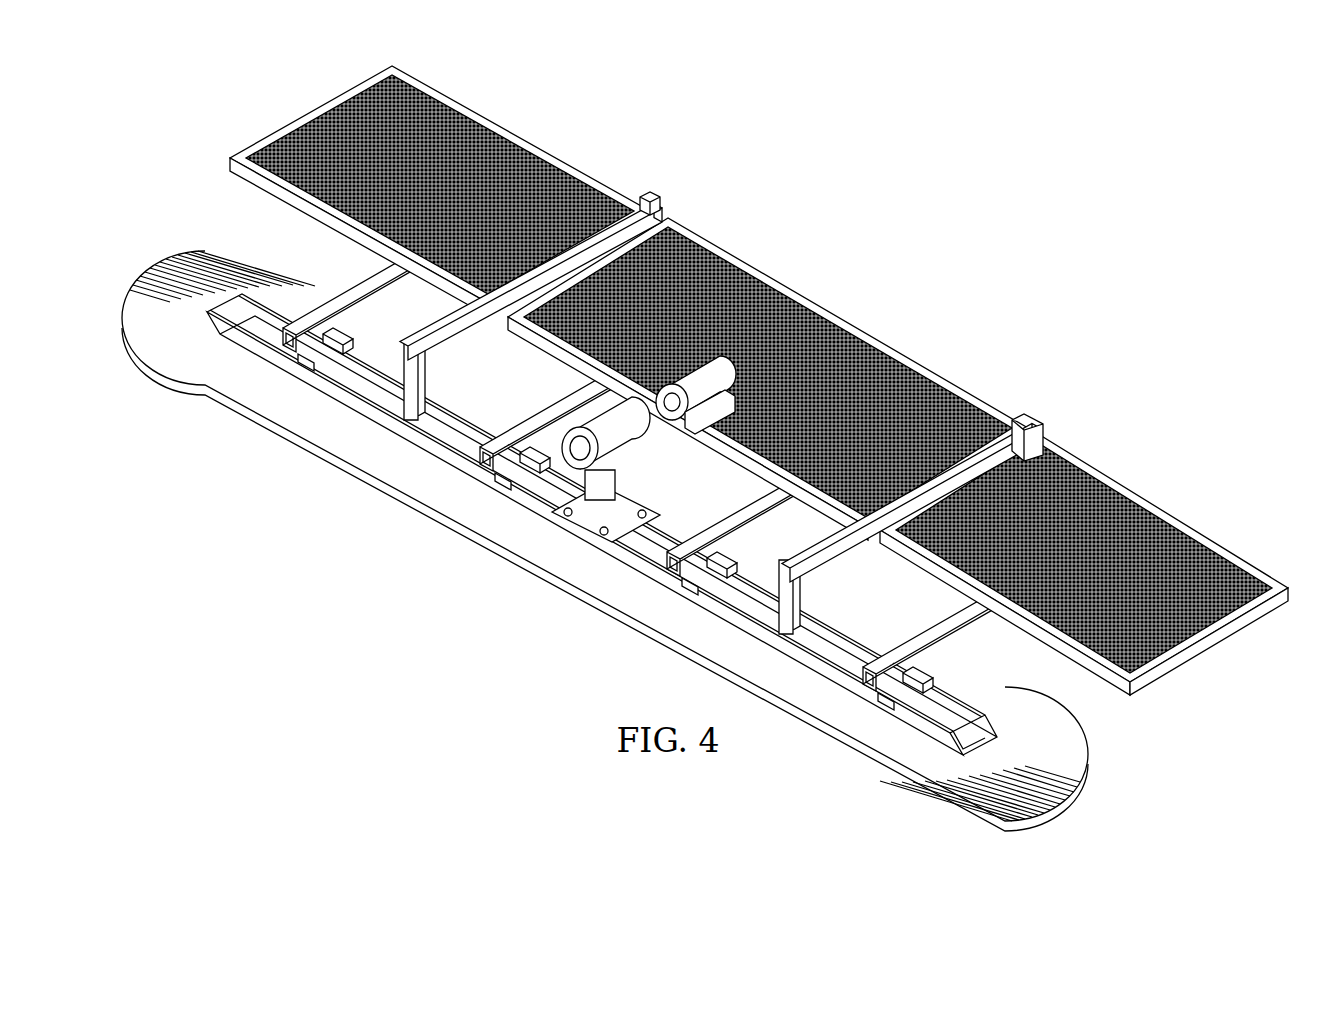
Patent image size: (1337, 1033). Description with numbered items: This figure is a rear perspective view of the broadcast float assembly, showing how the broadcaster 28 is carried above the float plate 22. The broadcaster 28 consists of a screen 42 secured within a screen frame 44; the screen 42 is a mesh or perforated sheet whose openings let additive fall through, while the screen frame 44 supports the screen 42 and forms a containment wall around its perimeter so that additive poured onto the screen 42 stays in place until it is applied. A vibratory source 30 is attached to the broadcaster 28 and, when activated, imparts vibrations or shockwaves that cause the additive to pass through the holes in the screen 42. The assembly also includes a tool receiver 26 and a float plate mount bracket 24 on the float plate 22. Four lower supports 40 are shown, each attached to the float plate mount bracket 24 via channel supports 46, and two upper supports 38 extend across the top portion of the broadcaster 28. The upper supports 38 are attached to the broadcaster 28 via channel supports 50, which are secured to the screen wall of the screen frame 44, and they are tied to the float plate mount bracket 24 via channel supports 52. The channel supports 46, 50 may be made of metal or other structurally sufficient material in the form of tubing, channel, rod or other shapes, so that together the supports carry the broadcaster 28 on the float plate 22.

The float plate 22 is at (1080, 735).
The float plate mount bracket 24 is at (990, 745).
The tool receiver 26 is at (640, 462).
The broadcaster 28 is at (750, 359).
The vibratory source 30 is at (735, 360).
The upper support 38 is at (672, 212).
The lower support 40 is at (330, 305).
The screen 42 is at (300, 182).
The screen frame 44 is at (750, 364).
The channel support 46 is at (302, 358).
The channel support 50 is at (648, 192).
The channel support 52 is at (422, 394).